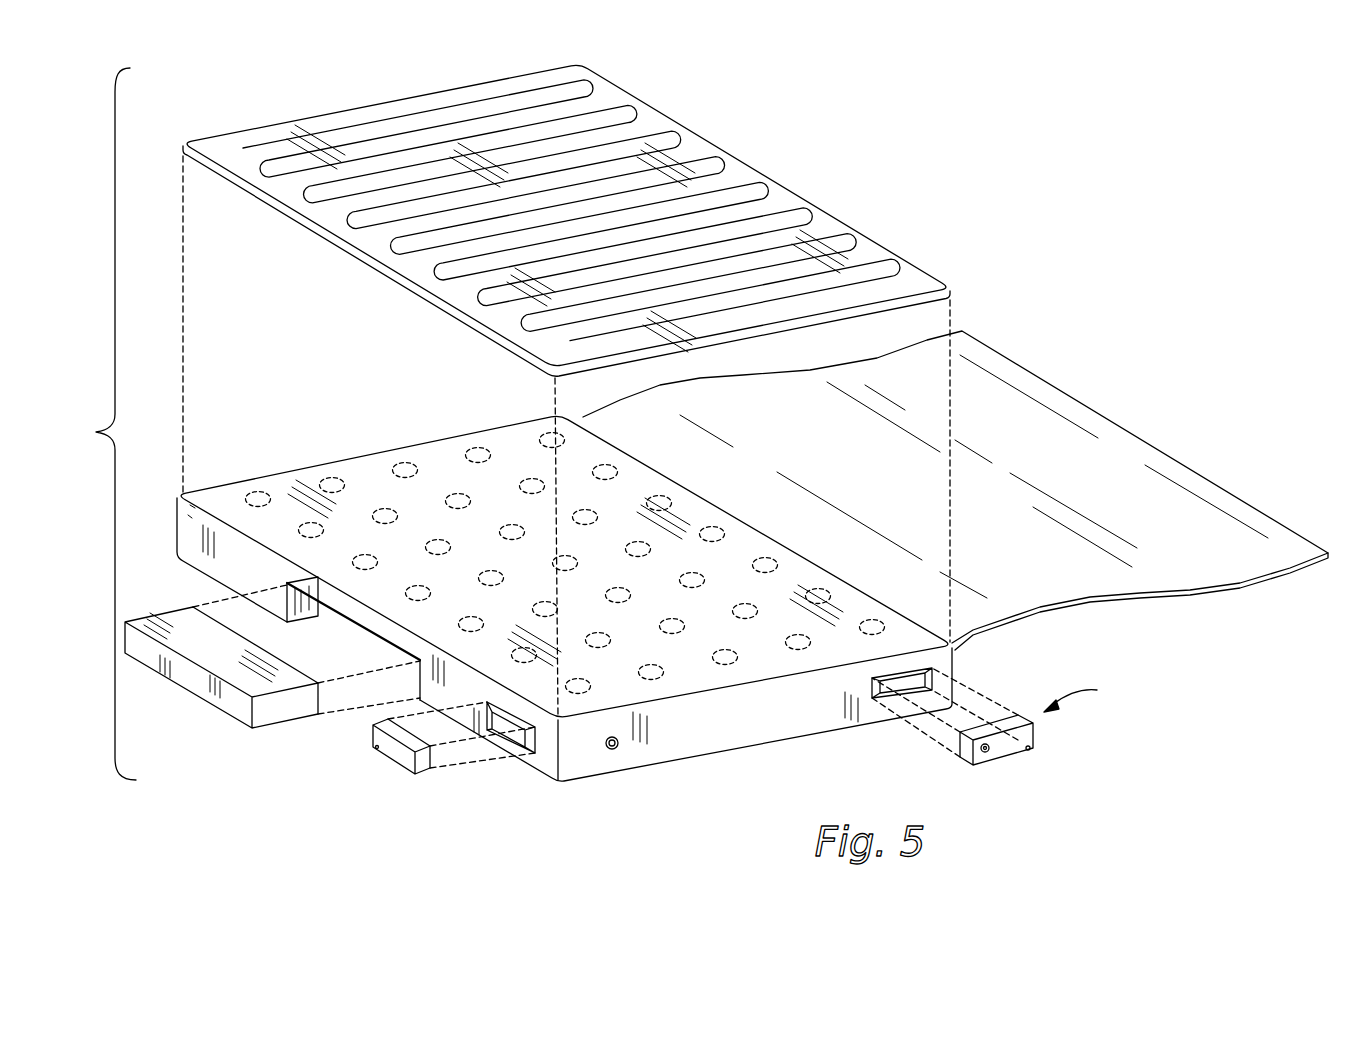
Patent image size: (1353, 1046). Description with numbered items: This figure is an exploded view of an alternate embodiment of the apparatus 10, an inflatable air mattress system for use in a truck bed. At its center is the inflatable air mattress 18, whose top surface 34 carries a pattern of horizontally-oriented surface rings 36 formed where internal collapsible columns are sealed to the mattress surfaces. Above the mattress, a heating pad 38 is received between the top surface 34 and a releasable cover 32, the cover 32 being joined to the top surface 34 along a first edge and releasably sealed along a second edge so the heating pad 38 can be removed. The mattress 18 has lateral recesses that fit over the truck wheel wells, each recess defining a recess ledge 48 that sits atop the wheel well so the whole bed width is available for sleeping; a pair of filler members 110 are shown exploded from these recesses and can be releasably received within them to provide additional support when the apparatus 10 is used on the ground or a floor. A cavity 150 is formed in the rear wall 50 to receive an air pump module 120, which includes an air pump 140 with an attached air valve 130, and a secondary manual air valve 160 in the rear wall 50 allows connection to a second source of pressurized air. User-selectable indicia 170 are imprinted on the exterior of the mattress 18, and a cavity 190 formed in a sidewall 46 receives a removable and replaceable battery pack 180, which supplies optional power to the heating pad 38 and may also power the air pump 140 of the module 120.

The apparatus 10 is at (100, 424).
The inflatable air mattress 18 is at (948, 660).
The cover 32 is at (1132, 600).
The top surface 34 is at (232, 498).
The surface rings 36 is at (477, 450).
The heating pad 38 is at (798, 193).
The sidewall 46 is at (228, 550).
The recess ledge 48 is at (403, 632).
The rear wall 50 is at (680, 738).
The filler members 110 is at (233, 698).
The air pump module 120 is at (1079, 686).
The air valve 130 is at (987, 755).
The air pump 140 is at (1013, 747).
The cavity 150 is at (903, 685).
The secondary manual air valve 160 is at (615, 750).
The user-selectable indicia 170 is at (771, 727).
The battery pack 180 is at (400, 750).
The cavity 190 is at (527, 737).